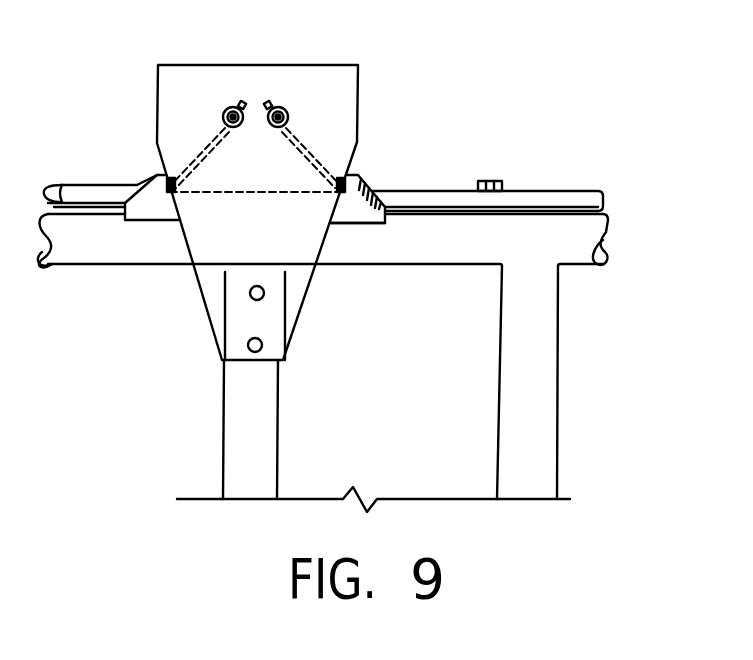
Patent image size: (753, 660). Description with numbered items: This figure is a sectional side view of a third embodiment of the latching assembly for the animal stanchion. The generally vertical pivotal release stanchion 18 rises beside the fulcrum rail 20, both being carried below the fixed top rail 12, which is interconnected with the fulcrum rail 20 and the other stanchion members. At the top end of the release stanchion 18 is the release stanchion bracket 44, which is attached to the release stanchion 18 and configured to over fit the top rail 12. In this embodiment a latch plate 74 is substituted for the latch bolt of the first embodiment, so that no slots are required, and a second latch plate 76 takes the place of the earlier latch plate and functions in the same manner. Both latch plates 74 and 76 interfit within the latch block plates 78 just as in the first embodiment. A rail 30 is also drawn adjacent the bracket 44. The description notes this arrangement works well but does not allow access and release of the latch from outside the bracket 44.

The fixed top rail 12 is at (158, 248).
The pivotal release stanchion 18 is at (265, 453).
The fulcrum rail 20 is at (547, 428).
The rail 30 is at (418, 188).
The release stanchion bracket 44 is at (292, 297).
The latch plate 74 is at (214, 130).
The latch plate 76 is at (298, 130).
The latch block plates 78 is at (362, 207).